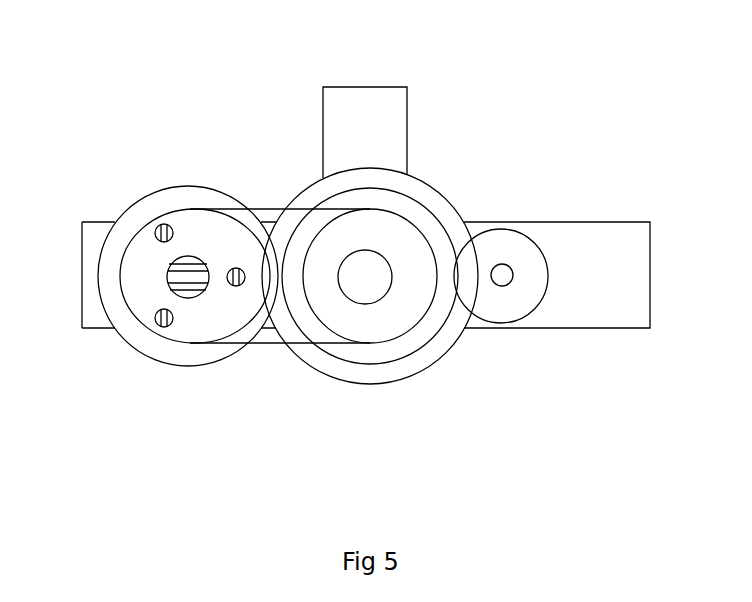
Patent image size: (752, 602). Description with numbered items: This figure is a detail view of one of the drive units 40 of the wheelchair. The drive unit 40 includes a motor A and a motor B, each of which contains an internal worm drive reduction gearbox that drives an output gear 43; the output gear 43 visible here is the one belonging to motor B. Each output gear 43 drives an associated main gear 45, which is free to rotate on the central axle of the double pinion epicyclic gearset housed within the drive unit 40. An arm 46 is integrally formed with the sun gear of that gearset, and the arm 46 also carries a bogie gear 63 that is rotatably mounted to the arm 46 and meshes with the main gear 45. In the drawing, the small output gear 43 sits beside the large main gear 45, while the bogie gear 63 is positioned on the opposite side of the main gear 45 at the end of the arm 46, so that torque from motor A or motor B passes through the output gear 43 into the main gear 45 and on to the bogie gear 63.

The drive unit 40 is at (523, 42).
The output gear 43 is at (500, 228).
The main gear 45 is at (408, 348).
The arm 46 is at (283, 213).
The bogie gear 63 is at (177, 363).
The motor A is at (87, 232).
The motor B is at (632, 323).